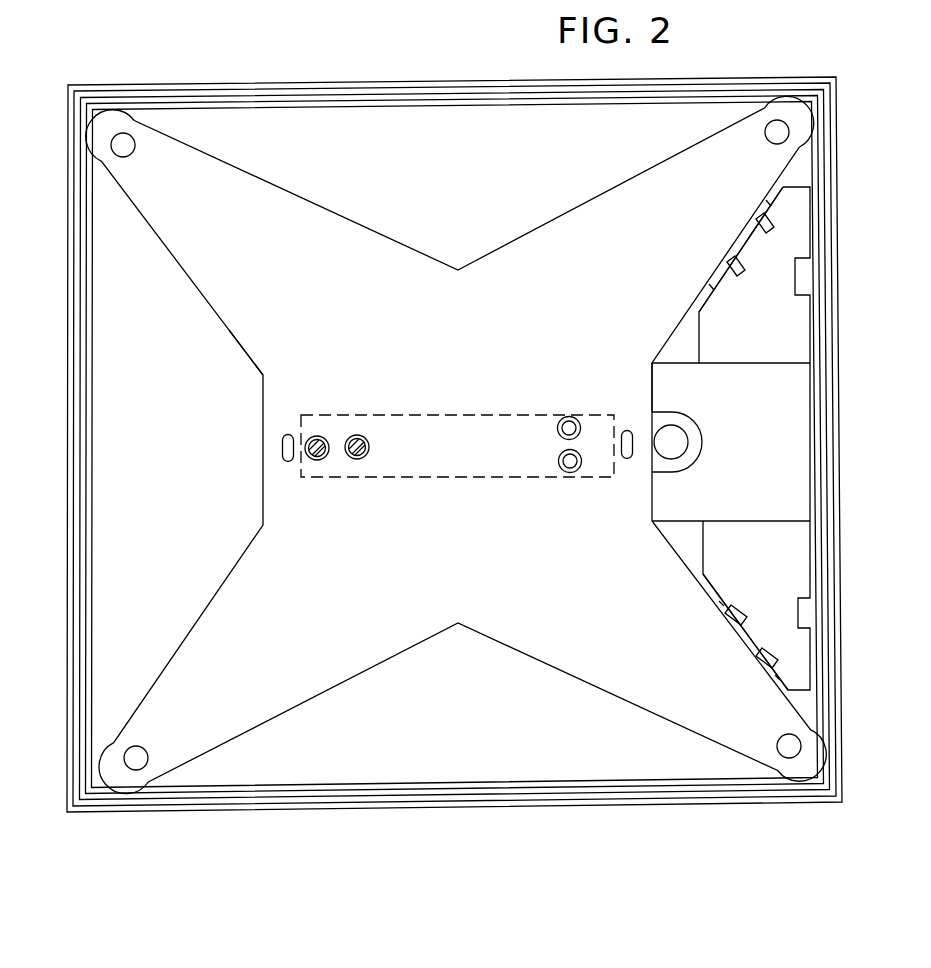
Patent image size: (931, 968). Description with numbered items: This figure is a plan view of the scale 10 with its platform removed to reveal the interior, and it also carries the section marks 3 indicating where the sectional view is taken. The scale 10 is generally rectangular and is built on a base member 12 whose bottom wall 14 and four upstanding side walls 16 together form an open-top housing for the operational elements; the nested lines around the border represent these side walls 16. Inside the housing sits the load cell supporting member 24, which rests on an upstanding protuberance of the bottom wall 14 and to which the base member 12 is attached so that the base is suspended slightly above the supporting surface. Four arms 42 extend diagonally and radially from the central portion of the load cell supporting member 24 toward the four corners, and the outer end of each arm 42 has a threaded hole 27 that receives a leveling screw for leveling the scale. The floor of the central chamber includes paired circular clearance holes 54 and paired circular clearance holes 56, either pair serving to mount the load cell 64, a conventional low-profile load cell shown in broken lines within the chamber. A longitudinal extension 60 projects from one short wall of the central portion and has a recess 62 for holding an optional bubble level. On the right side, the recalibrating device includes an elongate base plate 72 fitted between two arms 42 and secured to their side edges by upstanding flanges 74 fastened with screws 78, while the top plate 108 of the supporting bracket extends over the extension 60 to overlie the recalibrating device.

The scale 10 is at (712, 68).
The base member 12 is at (240, 84).
The bottom wall 14 is at (467, 720).
The side walls 16 is at (822, 565).
The load cell supporting member 24 is at (212, 327).
The threaded holes 27 is at (133, 153).
The arms 42 is at (283, 186).
The circular clearance holes 54 is at (558, 430).
The circular clearance holes 56 is at (355, 436).
The longitudinal extension 60 is at (702, 462).
The recess 62 is at (672, 440).
The load cell 64 is at (432, 415).
The base plate 72 is at (712, 337).
The upstanding flanges 74 is at (740, 249).
The screws 78 is at (730, 277).
The top plate 108 is at (657, 380).
The section line 3- 3 is at (42, 484).